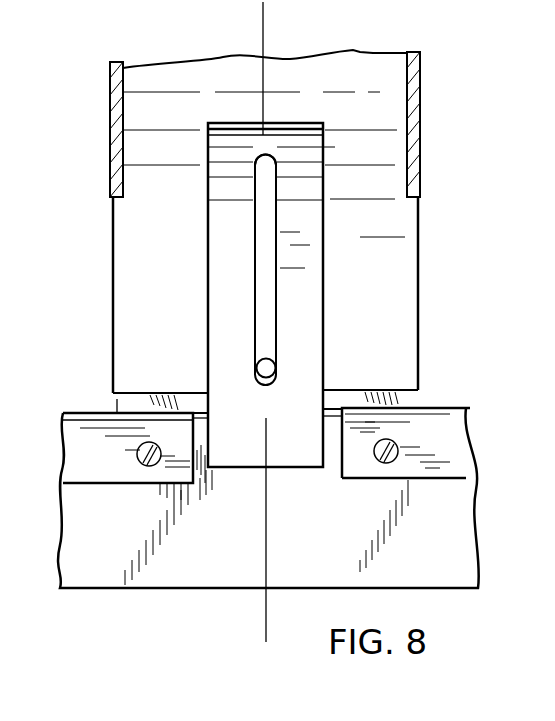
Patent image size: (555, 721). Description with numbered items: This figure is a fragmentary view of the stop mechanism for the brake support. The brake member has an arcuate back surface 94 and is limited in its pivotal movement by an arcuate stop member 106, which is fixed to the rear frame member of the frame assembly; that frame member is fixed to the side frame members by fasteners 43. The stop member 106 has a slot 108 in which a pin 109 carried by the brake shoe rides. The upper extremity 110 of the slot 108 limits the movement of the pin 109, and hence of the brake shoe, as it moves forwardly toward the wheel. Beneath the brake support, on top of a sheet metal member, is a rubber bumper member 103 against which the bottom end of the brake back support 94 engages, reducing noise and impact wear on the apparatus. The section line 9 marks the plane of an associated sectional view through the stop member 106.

The section line 9- 9 is at (268, 13).
The fasteners 43 is at (455, 517).
The arcuate back surface 94 is at (380, 112).
The rubber bumper member 103 is at (122, 404).
The arcuate stop member 106 is at (310, 256).
The slot 108 is at (264, 212).
The pin 109 is at (275, 365).
The upper extremity of the slot 110 is at (262, 156).